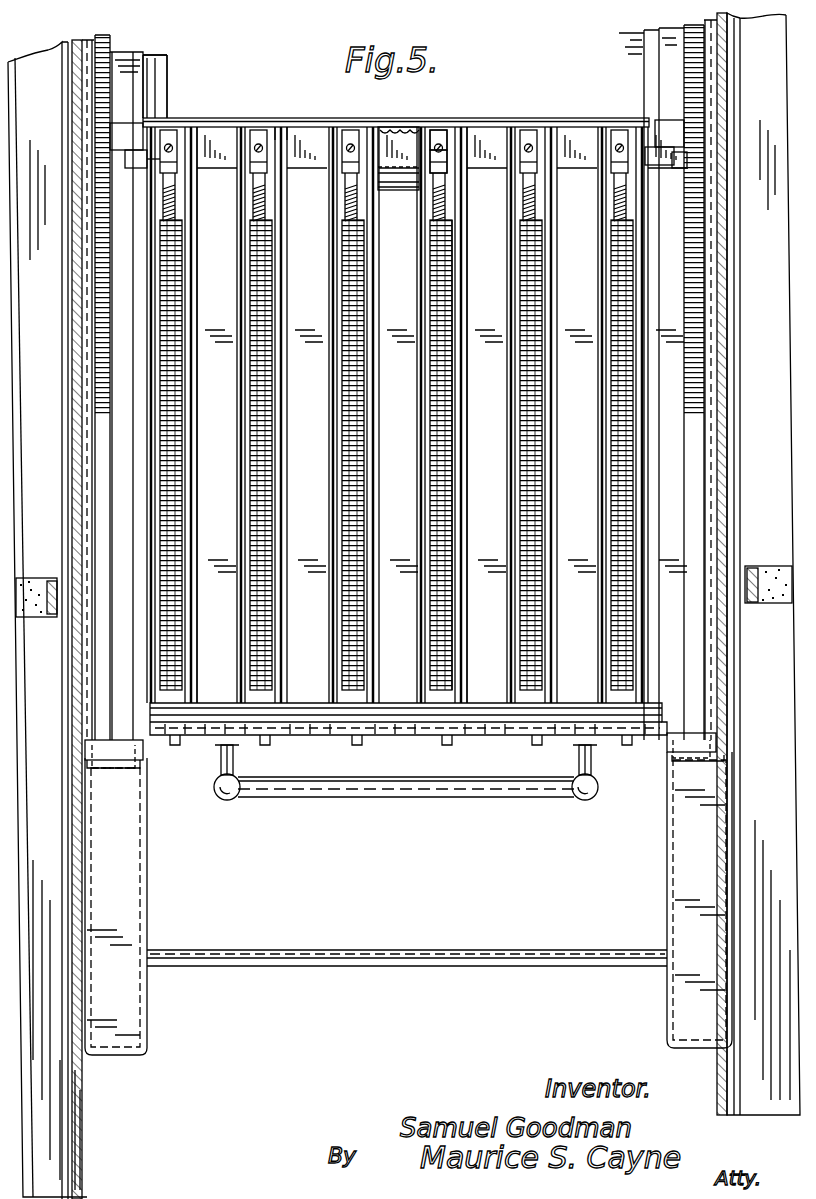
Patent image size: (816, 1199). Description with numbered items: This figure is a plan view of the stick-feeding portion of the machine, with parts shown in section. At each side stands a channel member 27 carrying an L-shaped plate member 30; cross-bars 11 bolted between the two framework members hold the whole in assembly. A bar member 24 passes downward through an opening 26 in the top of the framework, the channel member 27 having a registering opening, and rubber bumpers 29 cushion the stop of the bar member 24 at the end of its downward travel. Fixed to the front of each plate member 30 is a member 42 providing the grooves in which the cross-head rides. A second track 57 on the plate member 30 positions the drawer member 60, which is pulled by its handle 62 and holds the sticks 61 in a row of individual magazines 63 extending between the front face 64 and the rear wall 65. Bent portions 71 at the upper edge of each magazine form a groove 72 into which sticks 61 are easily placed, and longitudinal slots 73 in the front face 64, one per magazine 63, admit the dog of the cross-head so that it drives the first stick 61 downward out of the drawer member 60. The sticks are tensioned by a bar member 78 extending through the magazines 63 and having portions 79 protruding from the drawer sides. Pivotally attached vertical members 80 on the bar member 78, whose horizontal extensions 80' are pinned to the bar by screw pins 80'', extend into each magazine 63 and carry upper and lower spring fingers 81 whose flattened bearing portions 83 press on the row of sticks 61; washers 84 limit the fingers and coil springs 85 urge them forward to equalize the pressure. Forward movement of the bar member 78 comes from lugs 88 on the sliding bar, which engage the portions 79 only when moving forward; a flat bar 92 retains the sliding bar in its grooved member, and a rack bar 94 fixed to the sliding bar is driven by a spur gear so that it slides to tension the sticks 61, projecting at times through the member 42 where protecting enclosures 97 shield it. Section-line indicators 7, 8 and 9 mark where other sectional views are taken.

The cross-bars 11 is at (518, 966).
The bar member 24 is at (52, 580).
The opening 26 is at (52, 616).
The channel member 27 is at (46, 482).
The rubber bumpers 29 is at (30, 617).
The L-shaped plate member 30 is at (78, 332).
The track member 42 is at (118, 746).
The second track 57 is at (157, 107).
The drawer member 60 is at (213, 108).
The sticks 61 is at (458, 548).
The handle 62 is at (428, 798).
The individual magazines 63 is at (469, 457).
The front face 64 is at (392, 738).
The rear wall 65 is at (290, 137).
The bent portions 71 is at (197, 436).
The groove 72 is at (187, 384).
The longitudinal slots 73 is at (269, 738).
The bar member 78 is at (290, 130).
The outwardly extending portions 79 is at (140, 162).
The pivotally attached vertical member 80 is at (383, 137).
The horizontal extensions 80' is at (463, 159).
The screw pins 80'' is at (465, 136).
The spring fingers 81 is at (545, 194).
The flattened bearing portions 83 is at (543, 218).
The washers 84 is at (349, 160).
The coil springs 85 is at (272, 203).
The lugs 88 is at (118, 134).
The flat bar 92 is at (712, 82).
The rack bar 94 is at (700, 66).
The protecting enclosures 97 is at (130, 930).
The section line 7 is at (560, 92).
The section line 8 is at (489, 243).
The section line 9 is at (420, 92).